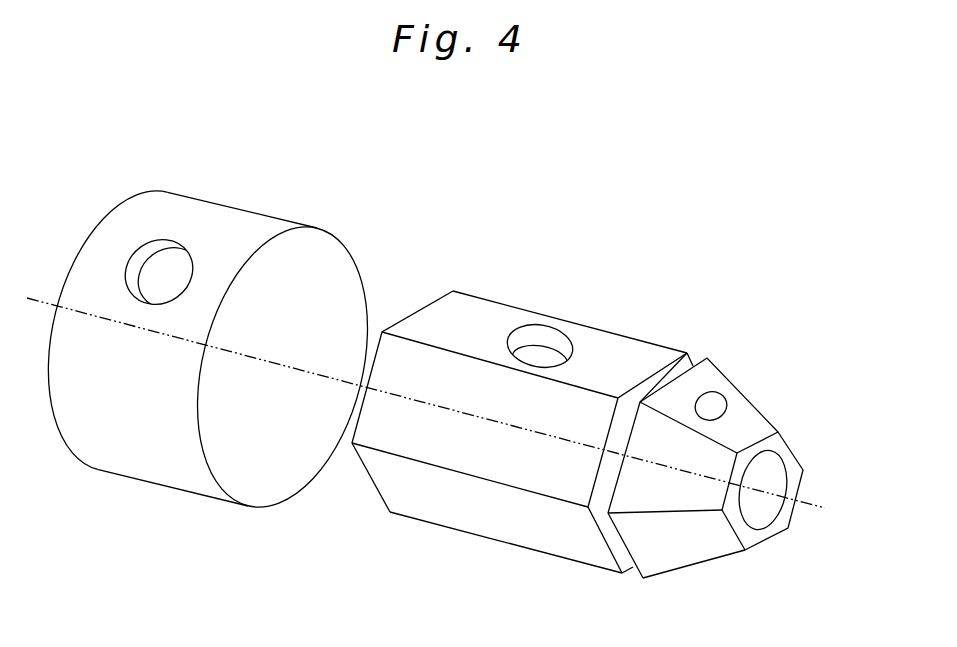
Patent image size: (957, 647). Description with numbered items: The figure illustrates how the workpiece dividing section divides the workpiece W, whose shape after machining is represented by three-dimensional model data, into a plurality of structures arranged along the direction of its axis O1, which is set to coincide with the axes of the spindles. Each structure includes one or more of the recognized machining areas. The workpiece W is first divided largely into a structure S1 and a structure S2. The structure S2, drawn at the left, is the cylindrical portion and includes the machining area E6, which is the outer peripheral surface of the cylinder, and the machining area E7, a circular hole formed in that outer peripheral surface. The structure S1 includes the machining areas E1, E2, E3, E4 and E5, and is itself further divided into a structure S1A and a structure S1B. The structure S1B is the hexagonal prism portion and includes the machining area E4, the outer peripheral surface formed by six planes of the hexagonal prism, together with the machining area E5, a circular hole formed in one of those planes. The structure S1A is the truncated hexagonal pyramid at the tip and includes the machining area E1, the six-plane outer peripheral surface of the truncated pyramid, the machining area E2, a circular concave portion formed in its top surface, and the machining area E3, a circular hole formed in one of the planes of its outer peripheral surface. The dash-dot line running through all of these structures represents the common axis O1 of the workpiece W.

The workpiece W is at (104, 177).
The structure S2 is at (279, 189).
The structure S1 is at (810, 232).
The structure S1A is at (782, 375).
The structure S1B is at (647, 315).
The machining area E1 is at (676, 544).
The machining area E2 is at (762, 491).
The machining area E3 is at (709, 405).
The machining area E4 is at (522, 434).
The machining area E5 is at (530, 347).
The machining area E6 is at (221, 358).
The machining area E7 is at (163, 274).
The axis O1 is at (441, 412).